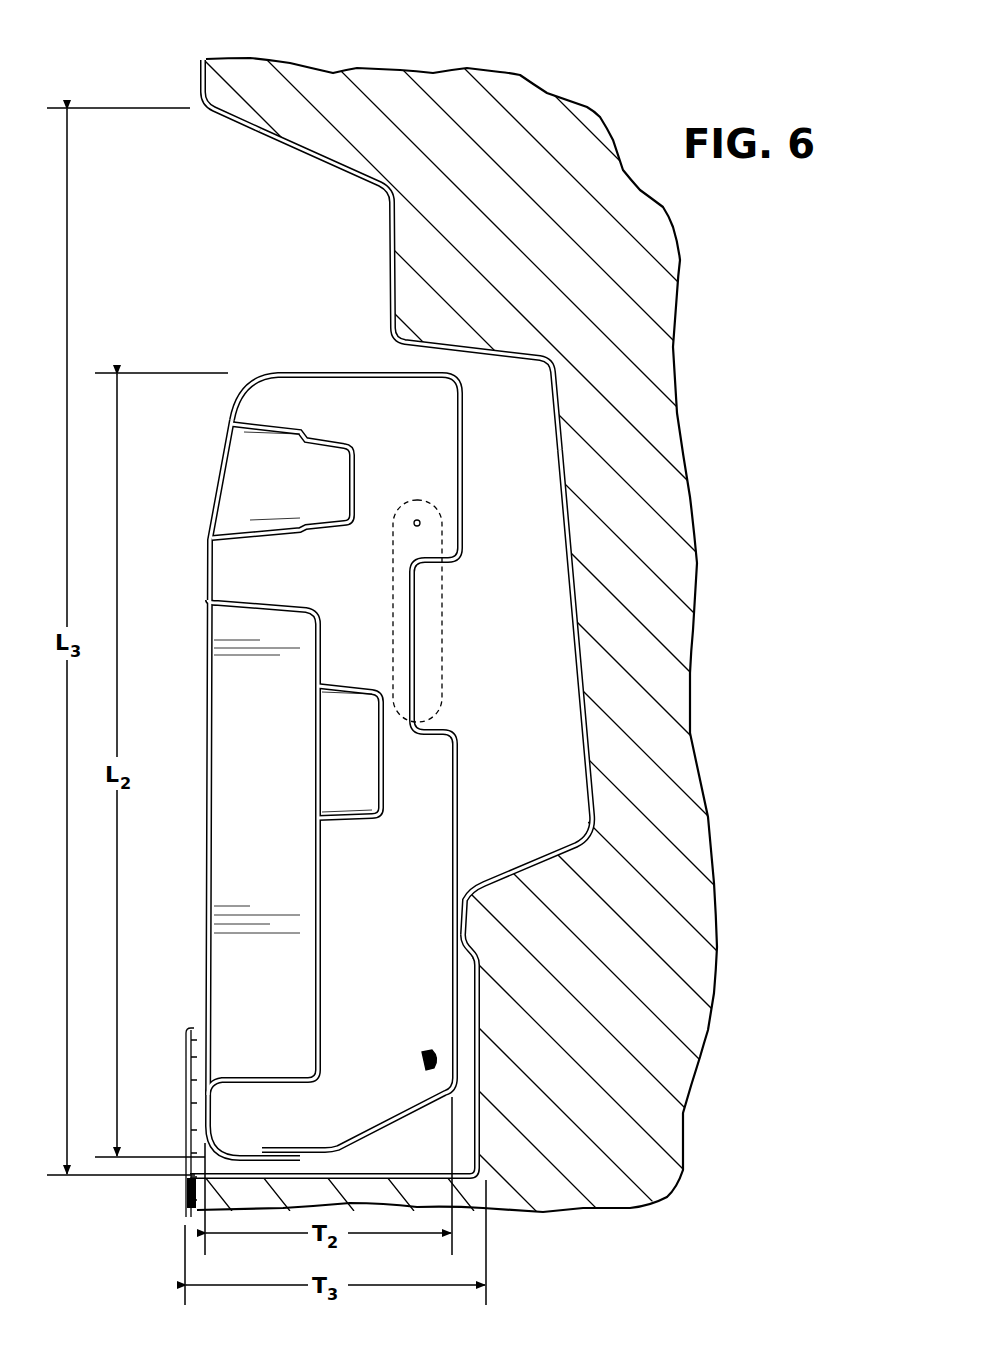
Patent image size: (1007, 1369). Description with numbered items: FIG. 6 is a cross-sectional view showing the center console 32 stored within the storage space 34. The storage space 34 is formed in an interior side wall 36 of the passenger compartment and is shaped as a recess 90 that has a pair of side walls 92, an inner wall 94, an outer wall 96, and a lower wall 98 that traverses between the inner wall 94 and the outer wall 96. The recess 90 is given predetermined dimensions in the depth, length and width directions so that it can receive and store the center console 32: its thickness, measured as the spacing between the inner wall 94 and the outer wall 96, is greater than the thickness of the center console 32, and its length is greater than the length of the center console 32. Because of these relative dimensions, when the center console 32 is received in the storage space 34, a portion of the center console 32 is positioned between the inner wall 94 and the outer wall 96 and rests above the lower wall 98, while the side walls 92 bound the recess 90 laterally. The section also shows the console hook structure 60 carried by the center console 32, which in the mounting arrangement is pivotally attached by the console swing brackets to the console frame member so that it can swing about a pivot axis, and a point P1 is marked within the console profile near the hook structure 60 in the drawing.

The center console 32 is at (250, 362).
The storage space 34 is at (150, 74).
The interior side wall 36 is at (207, 112).
The console hook structure 60 is at (440, 603).
The recess 90 is at (316, 259).
The side walls 92 is at (518, 650).
The inner wall 94 is at (580, 750).
The outer wall 96 is at (184, 1122).
The lower wall 98 is at (404, 1172).
The pivot point P1 is at (418, 521).